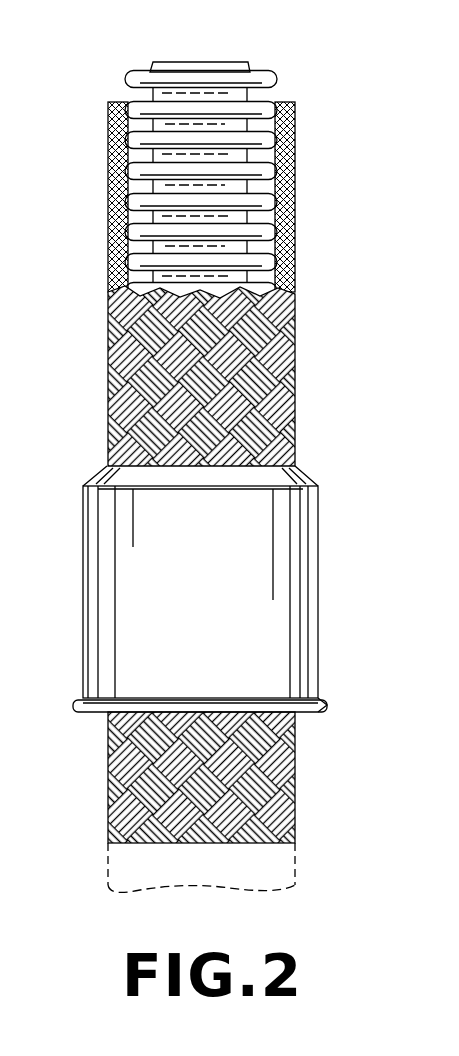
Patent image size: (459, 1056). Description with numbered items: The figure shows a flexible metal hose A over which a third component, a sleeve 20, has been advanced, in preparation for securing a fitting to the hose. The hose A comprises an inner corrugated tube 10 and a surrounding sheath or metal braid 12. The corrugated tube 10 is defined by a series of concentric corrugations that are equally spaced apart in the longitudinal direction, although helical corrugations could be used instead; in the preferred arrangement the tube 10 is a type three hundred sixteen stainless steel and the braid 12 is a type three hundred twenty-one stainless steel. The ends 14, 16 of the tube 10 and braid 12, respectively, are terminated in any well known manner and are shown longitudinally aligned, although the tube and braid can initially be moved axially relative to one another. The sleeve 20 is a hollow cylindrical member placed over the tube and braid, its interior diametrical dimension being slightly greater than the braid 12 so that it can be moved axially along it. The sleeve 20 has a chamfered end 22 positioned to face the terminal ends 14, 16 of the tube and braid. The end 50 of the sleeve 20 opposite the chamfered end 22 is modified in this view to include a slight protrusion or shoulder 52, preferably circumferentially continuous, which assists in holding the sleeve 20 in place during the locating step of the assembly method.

The flexible metal hose A is at (320, 111).
The inner corrugated tube 10 is at (208, 204).
The metal braid 12 is at (118, 355).
The end of the tube 14 is at (197, 62).
The end of the braid 16 is at (116, 100).
The sleeve 20 is at (108, 580).
The chamfered end 22 is at (307, 480).
The end of the sleeve 50 is at (122, 690).
The shoulder 52 is at (328, 703).